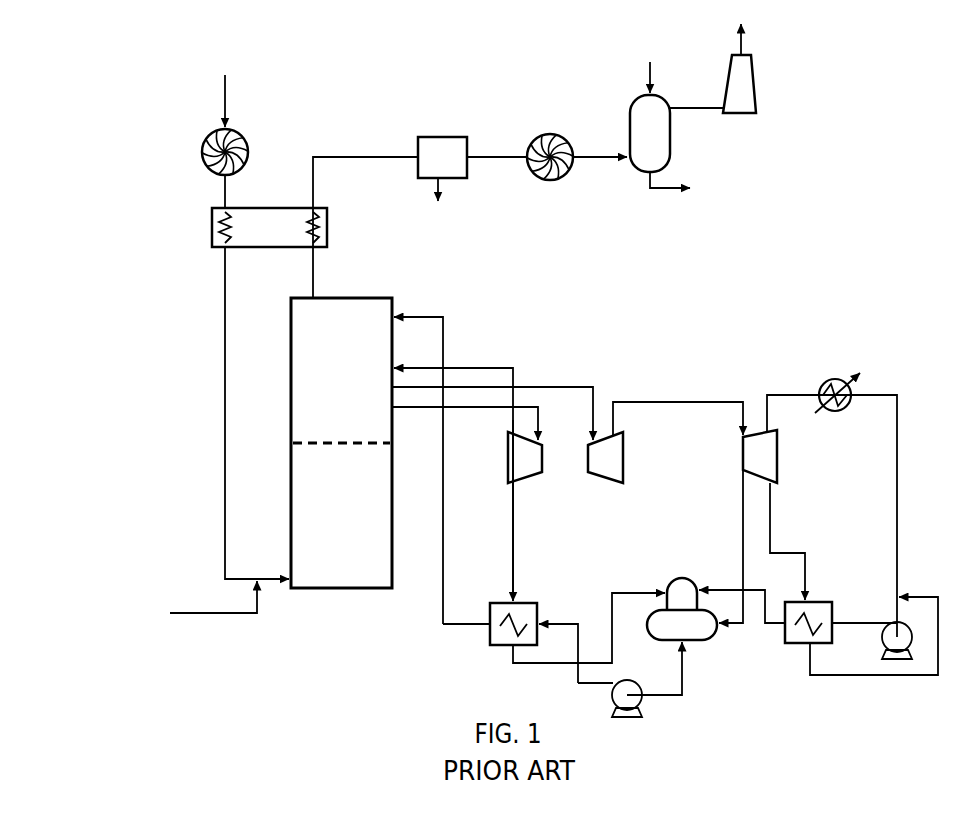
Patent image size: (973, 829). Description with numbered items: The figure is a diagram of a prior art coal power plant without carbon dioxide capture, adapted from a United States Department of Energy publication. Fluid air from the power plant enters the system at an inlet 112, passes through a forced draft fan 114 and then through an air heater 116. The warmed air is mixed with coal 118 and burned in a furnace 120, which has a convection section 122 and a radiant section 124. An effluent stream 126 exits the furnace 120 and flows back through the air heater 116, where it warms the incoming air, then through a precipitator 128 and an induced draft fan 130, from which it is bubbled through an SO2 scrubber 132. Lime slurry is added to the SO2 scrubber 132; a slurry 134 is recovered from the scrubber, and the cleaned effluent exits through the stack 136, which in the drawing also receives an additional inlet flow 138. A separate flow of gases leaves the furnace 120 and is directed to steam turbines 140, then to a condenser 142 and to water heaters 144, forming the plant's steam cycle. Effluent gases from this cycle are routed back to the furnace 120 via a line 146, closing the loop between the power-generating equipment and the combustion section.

The air inlet 112 is at (225, 89).
The forced draft fan 114 is at (203, 156).
The air heater 116 is at (210, 225).
The coal 118 is at (196, 602).
The furnace 120 is at (312, 483).
The convection section 122 is at (308, 368).
The radiant section 124 is at (313, 503).
The effluent stream 126 is at (320, 266).
The precipitator 128 is at (418, 144).
The induced draft fan 130 is at (528, 150).
The SO2 scrubber 132 is at (657, 135).
The slurry 134 is at (692, 185).
The stack 136 is at (738, 82).
The inlet stream 138 is at (648, 63).
The steam turbines 140 is at (762, 445).
The condenser 142 is at (828, 378).
The water heaters 144 is at (537, 647).
The line 146 is at (443, 333).